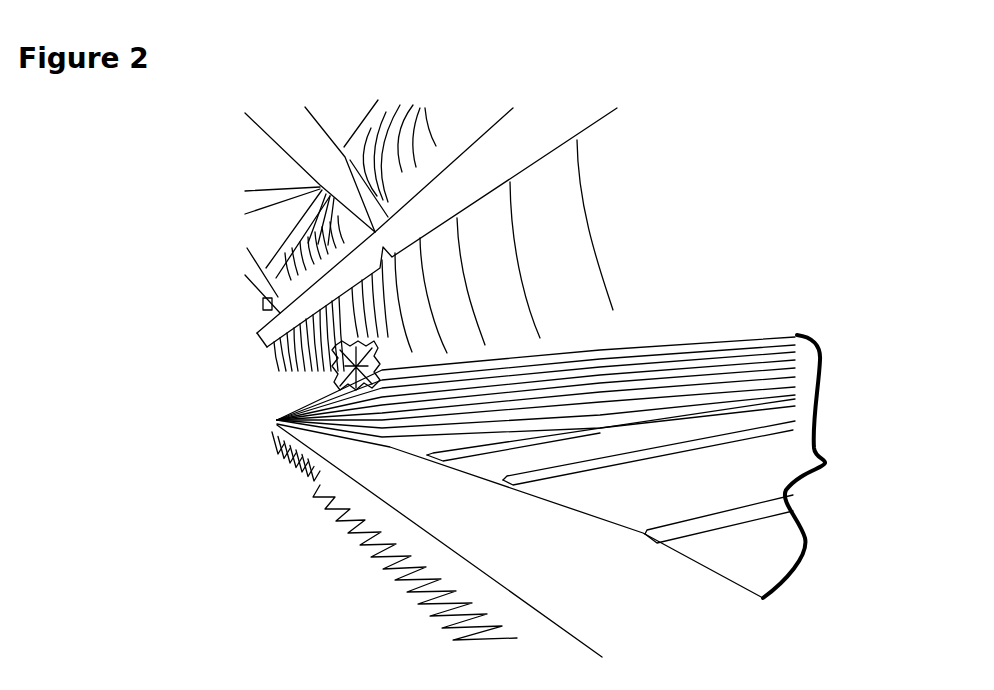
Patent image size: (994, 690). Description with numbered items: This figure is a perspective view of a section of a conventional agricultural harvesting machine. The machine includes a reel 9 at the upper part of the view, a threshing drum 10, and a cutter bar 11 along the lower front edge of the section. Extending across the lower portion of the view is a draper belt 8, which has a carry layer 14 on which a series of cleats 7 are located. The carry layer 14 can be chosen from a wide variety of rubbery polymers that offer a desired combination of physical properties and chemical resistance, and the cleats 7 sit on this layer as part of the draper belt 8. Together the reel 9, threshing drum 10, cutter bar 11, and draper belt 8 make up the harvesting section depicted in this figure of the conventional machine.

The cleats 7 is at (712, 522).
The draper belt 8 is at (825, 462).
The reel 9 is at (538, 142).
The threshing drum 10 is at (340, 378).
The cutter bar 11 is at (517, 617).
The carry layer 14 is at (657, 427).